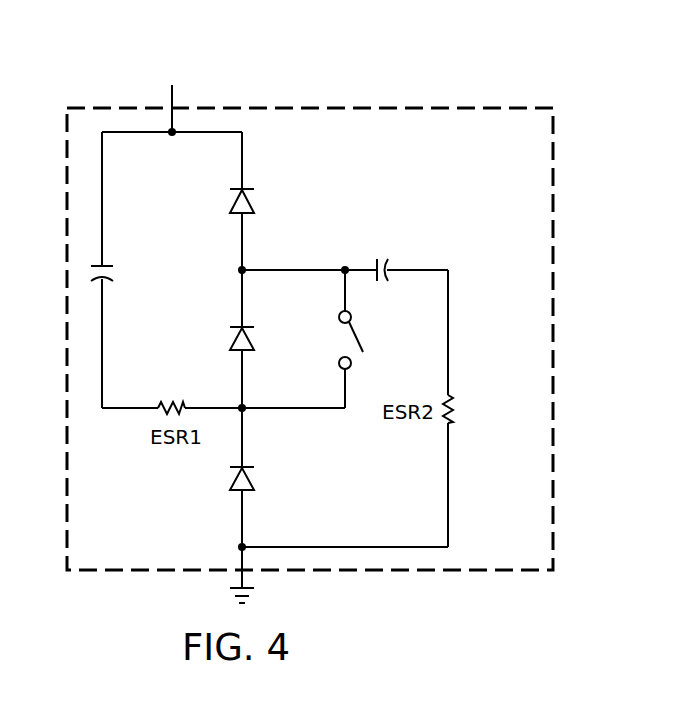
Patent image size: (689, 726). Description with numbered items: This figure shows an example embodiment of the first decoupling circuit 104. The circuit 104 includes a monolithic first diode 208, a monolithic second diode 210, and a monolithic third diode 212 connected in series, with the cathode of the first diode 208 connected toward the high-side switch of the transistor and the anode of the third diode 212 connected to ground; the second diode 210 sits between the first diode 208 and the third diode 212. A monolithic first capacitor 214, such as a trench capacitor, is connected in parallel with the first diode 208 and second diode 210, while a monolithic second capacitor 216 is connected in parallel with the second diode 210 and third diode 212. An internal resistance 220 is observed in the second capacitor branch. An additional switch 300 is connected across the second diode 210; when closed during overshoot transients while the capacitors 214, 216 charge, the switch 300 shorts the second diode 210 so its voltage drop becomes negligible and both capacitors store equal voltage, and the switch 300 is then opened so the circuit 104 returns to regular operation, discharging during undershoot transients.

The first decoupling circuit 104 is at (463, 109).
The first diode 208 is at (230, 193).
The second diode 210 is at (230, 333).
The third diode 212 is at (254, 478).
The first capacitor 214 is at (115, 270).
The second capacitor 216 is at (382, 256).
The internal resistance 220 is at (456, 410).
The switch 300 is at (357, 337).